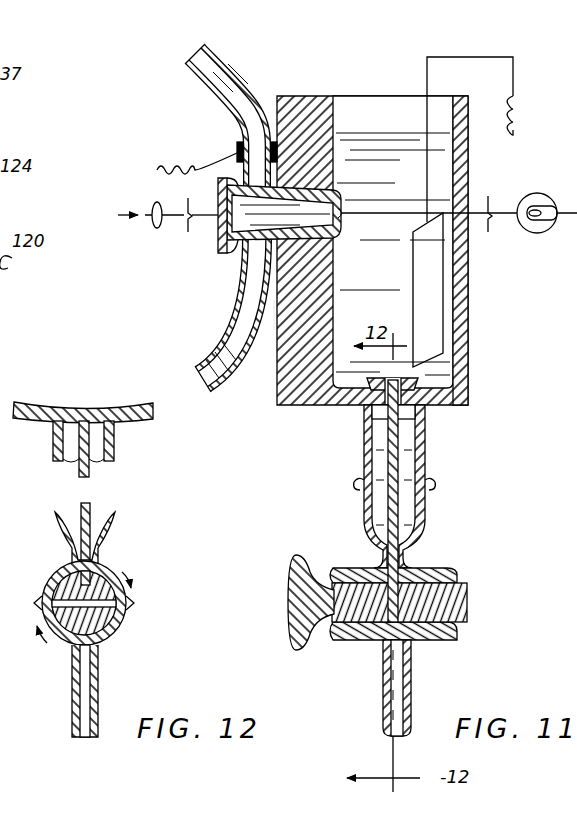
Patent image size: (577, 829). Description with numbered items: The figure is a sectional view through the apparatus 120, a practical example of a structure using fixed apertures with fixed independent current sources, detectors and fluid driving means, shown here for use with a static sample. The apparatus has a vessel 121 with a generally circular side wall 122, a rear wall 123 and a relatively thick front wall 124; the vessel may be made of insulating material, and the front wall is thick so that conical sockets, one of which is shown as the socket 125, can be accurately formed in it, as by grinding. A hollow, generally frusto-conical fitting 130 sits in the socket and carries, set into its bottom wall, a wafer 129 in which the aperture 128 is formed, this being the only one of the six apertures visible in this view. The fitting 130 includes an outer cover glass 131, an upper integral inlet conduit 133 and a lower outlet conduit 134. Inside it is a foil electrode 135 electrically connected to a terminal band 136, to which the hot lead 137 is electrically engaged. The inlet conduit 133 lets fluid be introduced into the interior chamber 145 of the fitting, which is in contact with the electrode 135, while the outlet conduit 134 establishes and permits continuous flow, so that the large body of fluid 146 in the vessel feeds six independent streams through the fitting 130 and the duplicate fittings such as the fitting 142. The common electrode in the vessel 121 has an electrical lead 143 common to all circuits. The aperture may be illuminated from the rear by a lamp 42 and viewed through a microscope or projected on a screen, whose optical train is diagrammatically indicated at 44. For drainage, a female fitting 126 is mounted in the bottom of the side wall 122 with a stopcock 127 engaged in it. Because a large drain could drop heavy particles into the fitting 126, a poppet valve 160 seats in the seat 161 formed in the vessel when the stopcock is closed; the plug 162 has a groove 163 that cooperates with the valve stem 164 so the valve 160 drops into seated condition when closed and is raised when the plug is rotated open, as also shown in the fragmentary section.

In FIG. 11, the lamp 42 is at (540, 193).
In FIG. 11, the optical train 44 is at (150, 228).
In FIG. 11, the apparatus 120 is at (470, 270).
In FIG. 11, the vessel 121 is at (370, 96).
In FIG. 11, the side wall 122 is at (440, 404).
In FIG. 11, the rear wall 123 is at (462, 166).
In FIG. 11, the front wall 124 is at (310, 386).
In FIG. 11, the conical socket 125 is at (336, 212).
In FIG. 11, the female fitting 126 is at (366, 452).
In FIG. 11, the stopcock 127 is at (296, 528).
In FIG. 11, the aperture 128 is at (338, 214).
In FIG. 11, the wafer 129 is at (341, 218).
In FIG. 11, the frusto-conical fitting 130 is at (216, 264).
In FIG. 11, the outer cover glass 131 is at (215, 243).
In FIG. 11, the inlet conduit 133 is at (248, 110).
In FIG. 11, the outlet conduit 134 is at (240, 320).
In FIG. 11, the foil electrode 135 is at (220, 199).
In FIG. 11, the terminal band 136 is at (238, 149).
In FIG. 11, the lead 137 is at (163, 172).
In FIG. 11, the fitting 142 is at (430, 290).
In FIG. 11, the electrical lead 143 is at (516, 122).
In FIG. 11, the interior chamber 145 is at (284, 315).
In FIG. 11, the fluid 146 is at (385, 312).
In FIG. 11, the poppet-valve 160 is at (372, 383).
In FIG. 12, the poppet-valve 160 is at (74, 410).
In FIG. 11, the seat 161 is at (370, 412).
In FIG. 12, the plug 162 is at (102, 627).
In FIG. 11, the groove 163 is at (388, 607).
In FIG. 12, the groove 163 is at (98, 578).
In FIG. 11, the valve stem 164 is at (398, 499).
In FIG. 12, the valve stem 164 is at (92, 505).